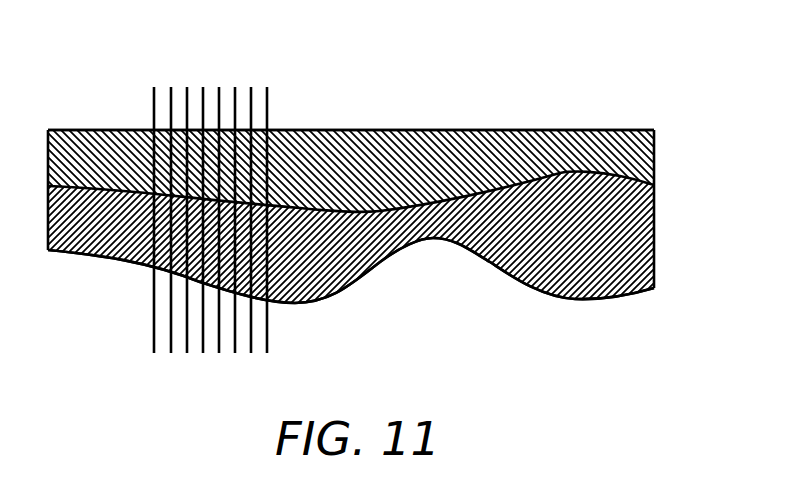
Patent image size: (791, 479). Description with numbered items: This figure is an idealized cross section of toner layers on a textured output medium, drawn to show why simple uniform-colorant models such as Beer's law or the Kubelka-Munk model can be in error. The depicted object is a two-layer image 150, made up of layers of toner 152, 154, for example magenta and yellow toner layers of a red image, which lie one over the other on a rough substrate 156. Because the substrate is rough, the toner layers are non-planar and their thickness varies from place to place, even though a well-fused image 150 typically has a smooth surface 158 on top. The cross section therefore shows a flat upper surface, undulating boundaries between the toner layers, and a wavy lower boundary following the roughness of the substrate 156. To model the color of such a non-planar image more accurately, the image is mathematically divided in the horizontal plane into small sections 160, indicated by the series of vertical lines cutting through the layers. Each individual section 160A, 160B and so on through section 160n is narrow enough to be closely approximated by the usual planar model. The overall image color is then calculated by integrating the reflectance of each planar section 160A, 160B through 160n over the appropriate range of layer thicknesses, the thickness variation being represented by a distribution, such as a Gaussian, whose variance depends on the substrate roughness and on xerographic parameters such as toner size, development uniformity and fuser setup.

The two-layer image 150 is at (395, 197).
The toner layer 152 is at (655, 158).
The toner layer 154 is at (655, 242).
The rough substrate 156 is at (449, 281).
The smooth surface 158 is at (401, 128).
The sections 160 is at (198, 219).
The section 160A is at (160, 317).
The section 160B is at (178, 340).
The section 160n is at (260, 338).